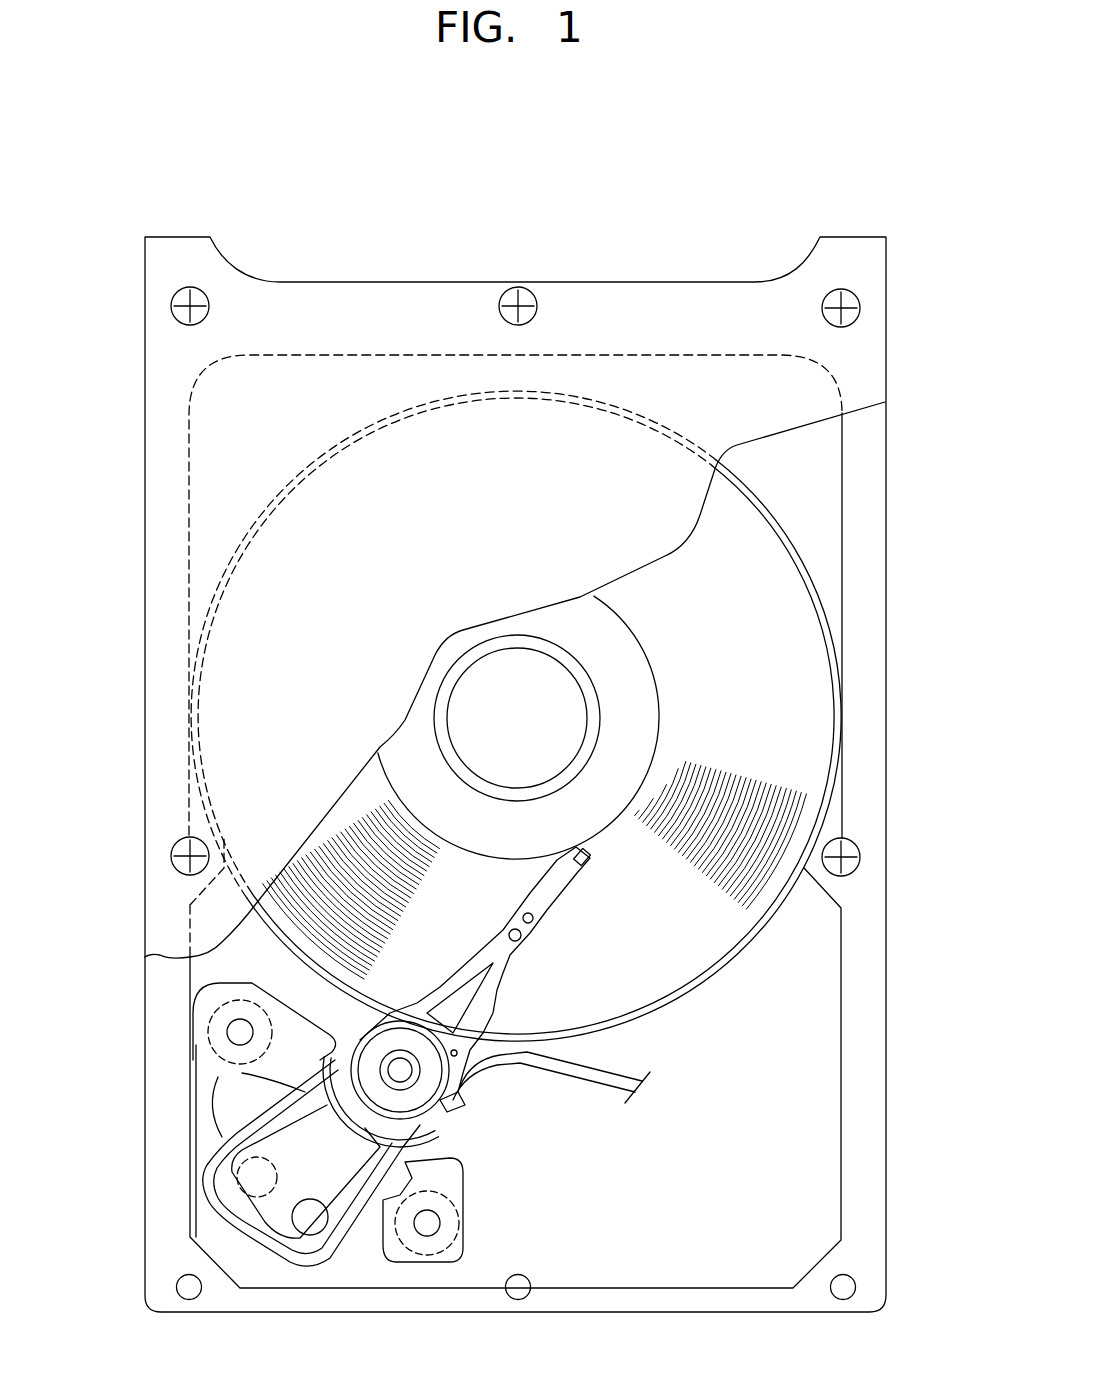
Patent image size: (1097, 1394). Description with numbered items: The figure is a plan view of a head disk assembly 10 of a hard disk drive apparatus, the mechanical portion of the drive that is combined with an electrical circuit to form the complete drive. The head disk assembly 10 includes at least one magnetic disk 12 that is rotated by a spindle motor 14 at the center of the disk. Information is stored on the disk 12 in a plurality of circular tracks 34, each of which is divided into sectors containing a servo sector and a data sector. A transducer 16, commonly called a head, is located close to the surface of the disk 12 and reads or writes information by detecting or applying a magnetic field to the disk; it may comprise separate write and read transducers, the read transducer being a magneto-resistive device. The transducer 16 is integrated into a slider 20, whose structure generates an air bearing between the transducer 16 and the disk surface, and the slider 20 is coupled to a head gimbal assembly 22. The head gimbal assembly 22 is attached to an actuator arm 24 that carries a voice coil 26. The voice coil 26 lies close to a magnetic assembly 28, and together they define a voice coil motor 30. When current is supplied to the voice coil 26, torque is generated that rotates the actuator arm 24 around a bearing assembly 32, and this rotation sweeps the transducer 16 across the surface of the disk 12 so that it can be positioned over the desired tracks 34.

The head disk assembly 10 is at (707, 212).
The magnetic disk 12 is at (790, 648).
The spindle motor 14 is at (490, 690).
The transducer 16 is at (586, 862).
The slider 20 is at (553, 887).
The head gimbal assembly 22 is at (515, 984).
The actuator arm 24 is at (235, 1068).
The voice coil 26 is at (237, 1160).
The magnetic assembly 28 is at (240, 1103).
The voice coil motor 30 is at (368, 1238).
The bearing assembly 32 is at (413, 1082).
The circular tracks 34 is at (360, 845).